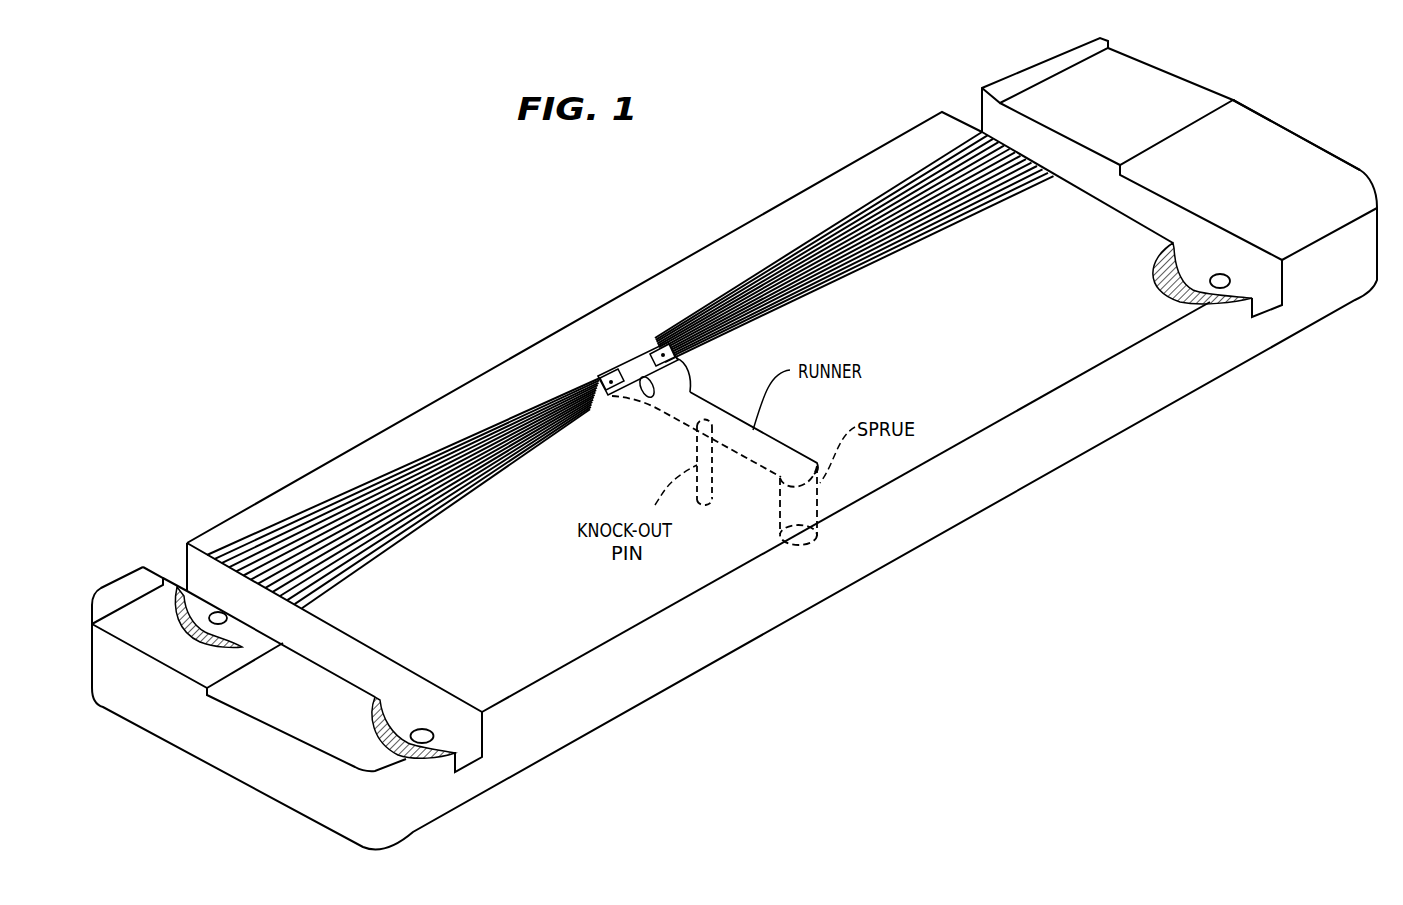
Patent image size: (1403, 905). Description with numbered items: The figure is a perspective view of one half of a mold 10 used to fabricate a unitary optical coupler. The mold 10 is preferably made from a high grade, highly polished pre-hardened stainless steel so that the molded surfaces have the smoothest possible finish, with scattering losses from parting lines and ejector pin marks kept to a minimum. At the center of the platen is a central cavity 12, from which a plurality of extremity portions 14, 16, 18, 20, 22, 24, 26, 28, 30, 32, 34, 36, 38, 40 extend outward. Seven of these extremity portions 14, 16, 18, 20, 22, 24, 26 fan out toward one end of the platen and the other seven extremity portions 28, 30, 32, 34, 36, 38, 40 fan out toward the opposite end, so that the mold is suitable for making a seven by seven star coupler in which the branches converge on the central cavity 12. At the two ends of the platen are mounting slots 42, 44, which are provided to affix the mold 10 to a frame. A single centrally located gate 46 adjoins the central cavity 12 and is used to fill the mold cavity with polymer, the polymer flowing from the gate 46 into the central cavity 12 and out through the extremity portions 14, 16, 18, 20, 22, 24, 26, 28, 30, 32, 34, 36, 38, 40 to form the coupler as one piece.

The mold 10 is at (410, 356).
The central cavity 12 is at (606, 376).
The extremity portion 14 is at (492, 480).
The extremity portion 16 is at (457, 493).
The extremity portion 18 is at (413, 510).
The extremity portion 20 is at (350, 535).
The extremity portion 22 is at (307, 547).
The extremity portion 24 is at (332, 520).
The extremity portion 26 is at (370, 487).
The extremity portion 28 is at (958, 176).
The extremity portion 30 is at (914, 188).
The extremity portion 32 is at (880, 197).
The extremity portion 34 is at (990, 177).
The extremity portion 36 is at (943, 208).
The extremity portion 38 is at (897, 240).
The extremity portion 40 is at (870, 265).
The mounting slot 42 is at (166, 560).
The mounting slot 44 is at (1018, 74).
The gate 46 is at (648, 352).